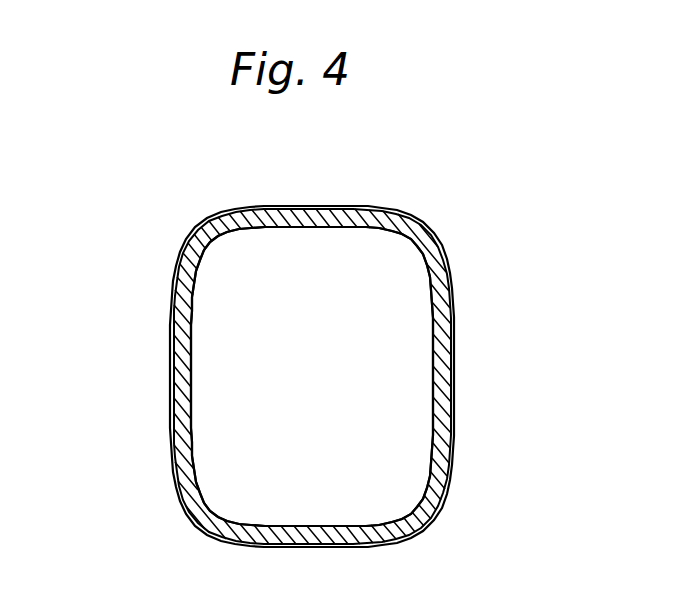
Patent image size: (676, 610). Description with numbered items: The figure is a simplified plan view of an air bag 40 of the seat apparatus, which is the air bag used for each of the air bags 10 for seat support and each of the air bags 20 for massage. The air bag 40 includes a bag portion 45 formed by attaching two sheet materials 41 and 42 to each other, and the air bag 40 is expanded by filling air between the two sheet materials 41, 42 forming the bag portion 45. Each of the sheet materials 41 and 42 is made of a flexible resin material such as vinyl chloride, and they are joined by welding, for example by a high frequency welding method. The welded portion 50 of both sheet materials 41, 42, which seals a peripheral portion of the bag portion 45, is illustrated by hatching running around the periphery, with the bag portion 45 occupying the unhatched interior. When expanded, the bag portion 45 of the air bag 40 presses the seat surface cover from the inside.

The air bag 40 is at (280, 342).
The air bag for seat support 10 is at (280, 342).
The air bag for massage 20 is at (100, 202).
The welded portion 50 is at (313, 213).
The bag portion 45 is at (208, 342).
The sheet material 41 is at (364, 376).
The sheet material 42 is at (455, 363).